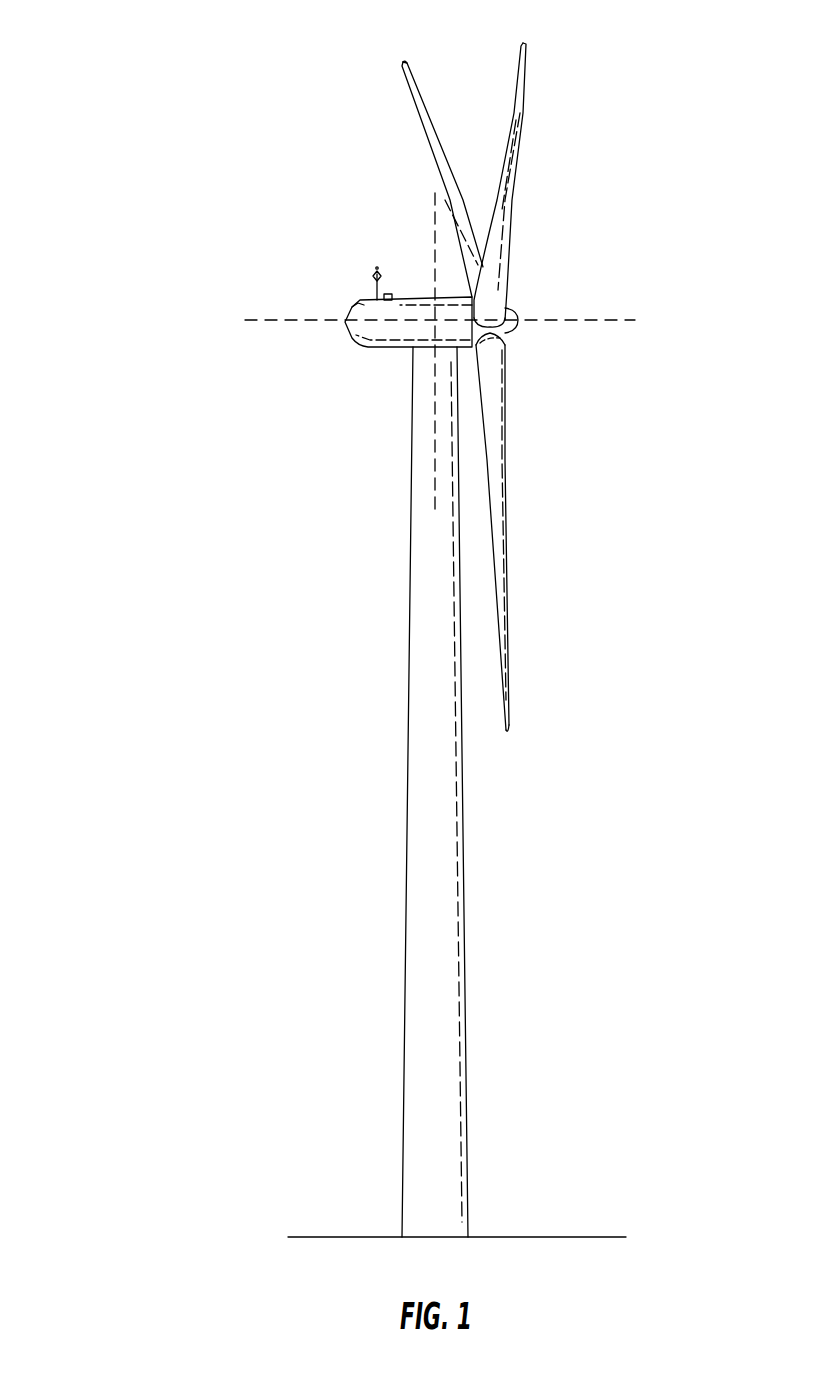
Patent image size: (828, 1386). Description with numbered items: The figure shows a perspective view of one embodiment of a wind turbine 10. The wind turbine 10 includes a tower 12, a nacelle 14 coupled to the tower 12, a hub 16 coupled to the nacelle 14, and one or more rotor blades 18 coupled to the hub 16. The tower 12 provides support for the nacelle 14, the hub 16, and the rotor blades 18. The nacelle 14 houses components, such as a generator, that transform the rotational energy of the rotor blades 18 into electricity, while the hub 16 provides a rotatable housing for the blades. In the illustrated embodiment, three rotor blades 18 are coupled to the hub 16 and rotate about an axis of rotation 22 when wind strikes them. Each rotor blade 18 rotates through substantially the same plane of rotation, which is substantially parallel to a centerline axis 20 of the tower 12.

The wind turbine 10 is at (186, 114).
The tower 12 is at (404, 991).
The nacelle 14 is at (380, 348).
The hub 16 is at (518, 310).
The rotor blades 18 is at (508, 517).
The centerline axis 20 is at (431, 230).
The axis of rotation 22 is at (582, 322).